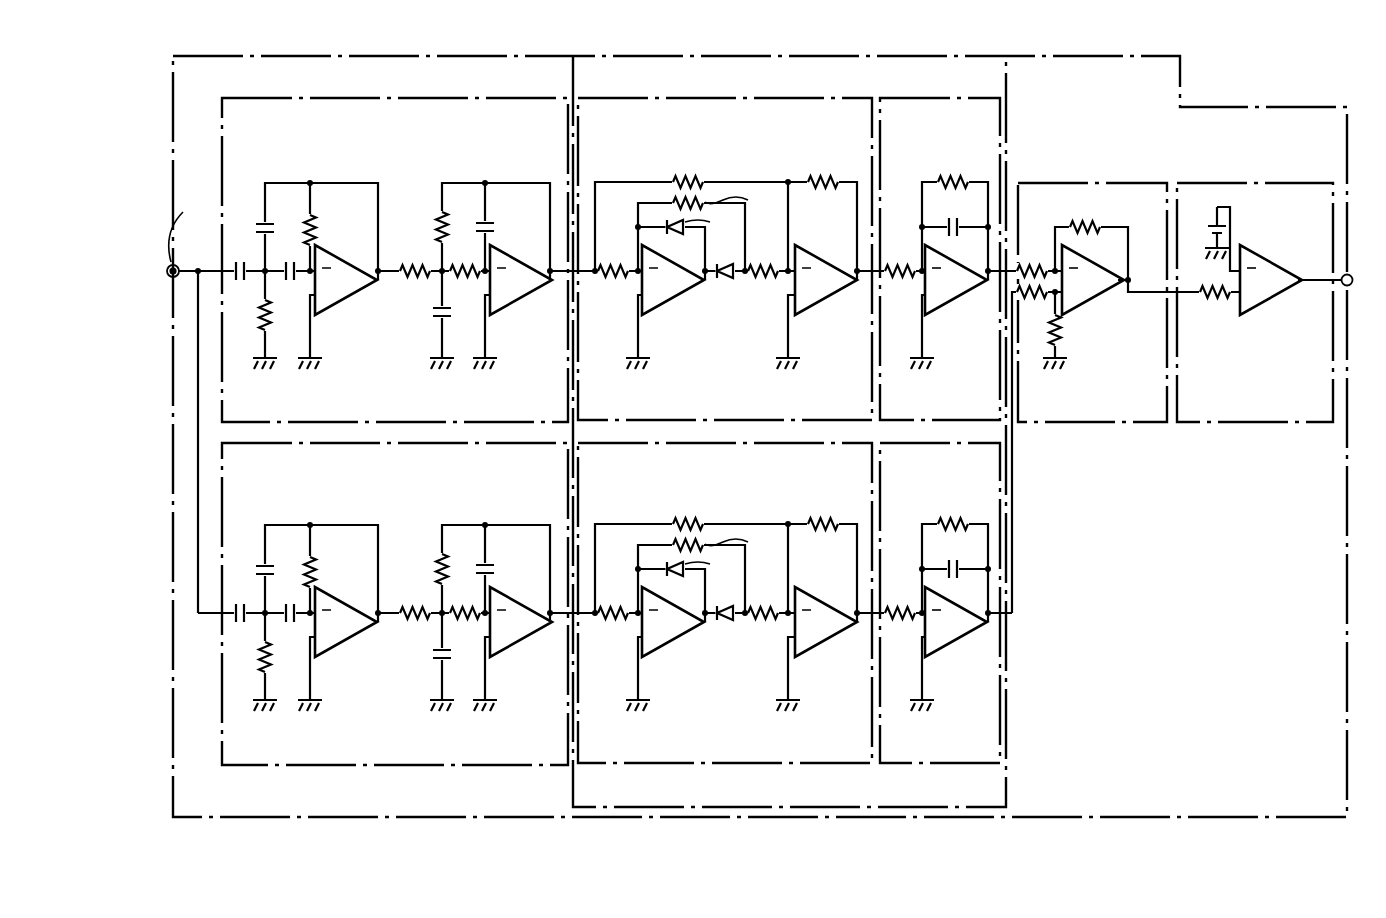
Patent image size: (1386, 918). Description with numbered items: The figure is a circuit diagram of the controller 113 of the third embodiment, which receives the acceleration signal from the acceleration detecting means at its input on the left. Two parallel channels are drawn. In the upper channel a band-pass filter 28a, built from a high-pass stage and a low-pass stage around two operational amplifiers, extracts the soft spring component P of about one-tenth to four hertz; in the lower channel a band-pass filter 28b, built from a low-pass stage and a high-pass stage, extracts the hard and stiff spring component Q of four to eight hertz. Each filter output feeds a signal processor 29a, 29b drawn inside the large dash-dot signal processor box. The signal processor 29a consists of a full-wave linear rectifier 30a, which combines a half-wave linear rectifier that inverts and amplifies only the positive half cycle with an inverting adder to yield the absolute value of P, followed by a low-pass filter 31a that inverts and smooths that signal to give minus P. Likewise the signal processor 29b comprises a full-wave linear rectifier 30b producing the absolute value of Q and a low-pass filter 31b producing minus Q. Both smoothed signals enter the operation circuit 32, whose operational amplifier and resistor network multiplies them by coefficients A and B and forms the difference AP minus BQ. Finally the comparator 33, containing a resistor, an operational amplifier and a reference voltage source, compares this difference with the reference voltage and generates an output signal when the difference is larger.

The band-pass filter 28a is at (337, 104).
The band-pass filter 28b is at (258, 757).
The signal processor 29a is at (1005, 70).
The signal processor 29b is at (1003, 785).
The full-wave linear rectifier 30a is at (682, 102).
The full-wave linear rectifier 30b is at (592, 757).
The low-pass filter 31a is at (926, 98).
The low-pass filter 31b is at (958, 765).
The operation circuit 32 is at (1042, 181).
The comparator 33 is at (1240, 181).
The controller 113 is at (1348, 108).